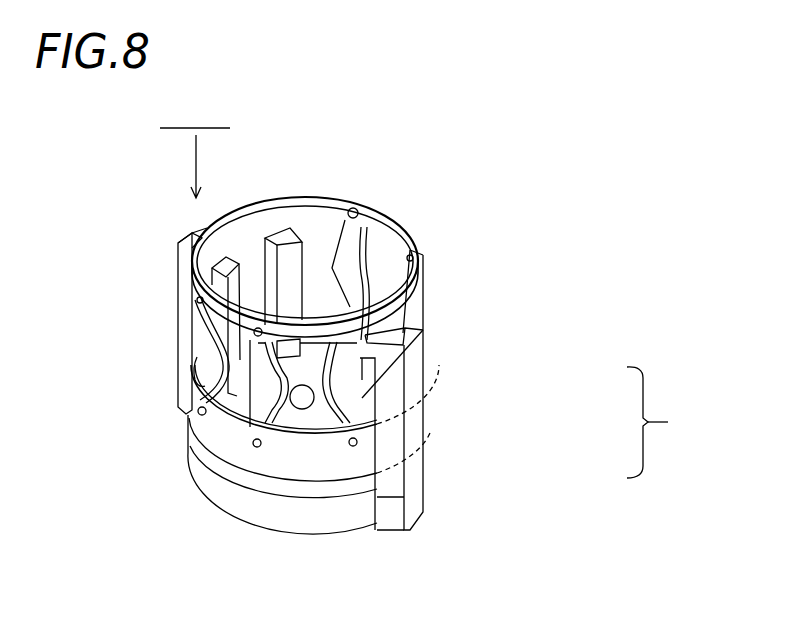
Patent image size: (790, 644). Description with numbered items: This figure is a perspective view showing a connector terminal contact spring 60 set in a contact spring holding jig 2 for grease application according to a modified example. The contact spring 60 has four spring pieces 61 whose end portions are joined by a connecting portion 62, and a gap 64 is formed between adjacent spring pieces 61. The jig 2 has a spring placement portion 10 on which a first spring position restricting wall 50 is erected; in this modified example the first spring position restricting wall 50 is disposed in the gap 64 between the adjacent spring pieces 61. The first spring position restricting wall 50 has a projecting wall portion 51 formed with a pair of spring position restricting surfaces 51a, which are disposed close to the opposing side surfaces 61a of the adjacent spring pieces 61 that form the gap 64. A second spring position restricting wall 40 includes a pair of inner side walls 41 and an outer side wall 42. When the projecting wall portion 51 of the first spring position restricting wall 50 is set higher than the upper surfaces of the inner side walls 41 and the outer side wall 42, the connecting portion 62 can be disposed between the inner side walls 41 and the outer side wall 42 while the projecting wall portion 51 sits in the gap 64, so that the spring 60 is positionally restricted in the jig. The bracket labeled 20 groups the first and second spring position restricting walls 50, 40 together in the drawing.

The contact spring holding jig for grease application 2 is at (195, 144).
The spring placement portion 10 is at (333, 524).
The holder assembly 20 is at (645, 422).
The second spring position restricting wall 40 is at (165, 313).
The inner side wall 41 is at (221, 255).
The outer side wall 42 is at (190, 215).
The first spring position restricting wall 50 is at (430, 393).
The projecting wall portion 51 is at (366, 342).
The spring position restricting surface 51a is at (422, 330).
The connector terminal contact spring 60 is at (334, 188).
The spring piece 61 is at (358, 247).
The side surface 61a is at (325, 318).
The connecting portion 62 is at (310, 477).
The gap 64 is at (380, 427).